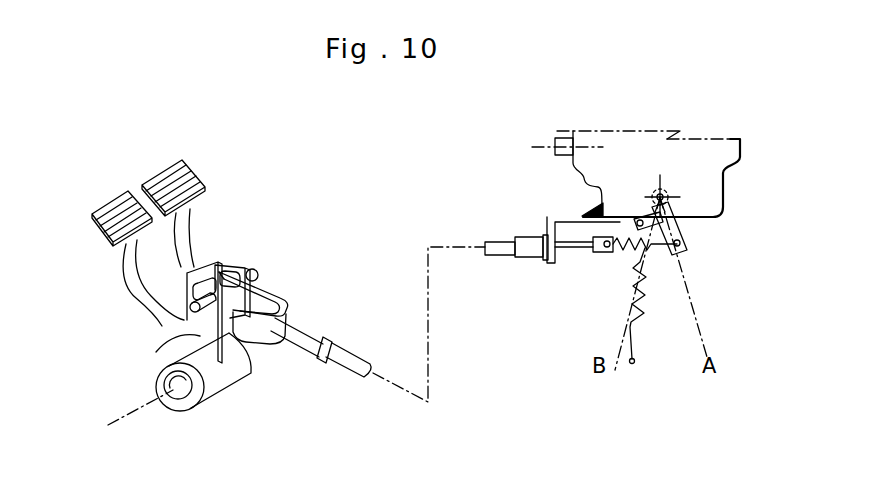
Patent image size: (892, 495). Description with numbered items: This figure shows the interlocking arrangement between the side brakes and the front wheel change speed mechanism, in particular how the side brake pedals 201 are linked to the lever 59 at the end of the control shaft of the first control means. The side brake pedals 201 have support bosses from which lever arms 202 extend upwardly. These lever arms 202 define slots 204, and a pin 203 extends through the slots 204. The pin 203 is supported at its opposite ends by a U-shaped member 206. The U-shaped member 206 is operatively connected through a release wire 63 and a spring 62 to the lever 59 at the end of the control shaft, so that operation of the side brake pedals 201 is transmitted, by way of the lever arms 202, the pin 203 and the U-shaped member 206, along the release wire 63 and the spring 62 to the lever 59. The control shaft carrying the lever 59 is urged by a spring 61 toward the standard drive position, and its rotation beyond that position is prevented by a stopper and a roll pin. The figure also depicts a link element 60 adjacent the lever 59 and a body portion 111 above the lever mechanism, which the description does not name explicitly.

The side brake pedals 201 is at (160, 180).
The lever arms 202 is at (256, 265).
The pin 203 is at (189, 307).
The slots 204 is at (204, 274).
The U-shaped member 206 is at (262, 333).
The lever 59 is at (687, 233).
The link 60 is at (647, 218).
The spring 61 is at (643, 302).
The spring 62 is at (638, 250).
The release wire 63 is at (501, 252).
The vehicle body 111 is at (712, 160).